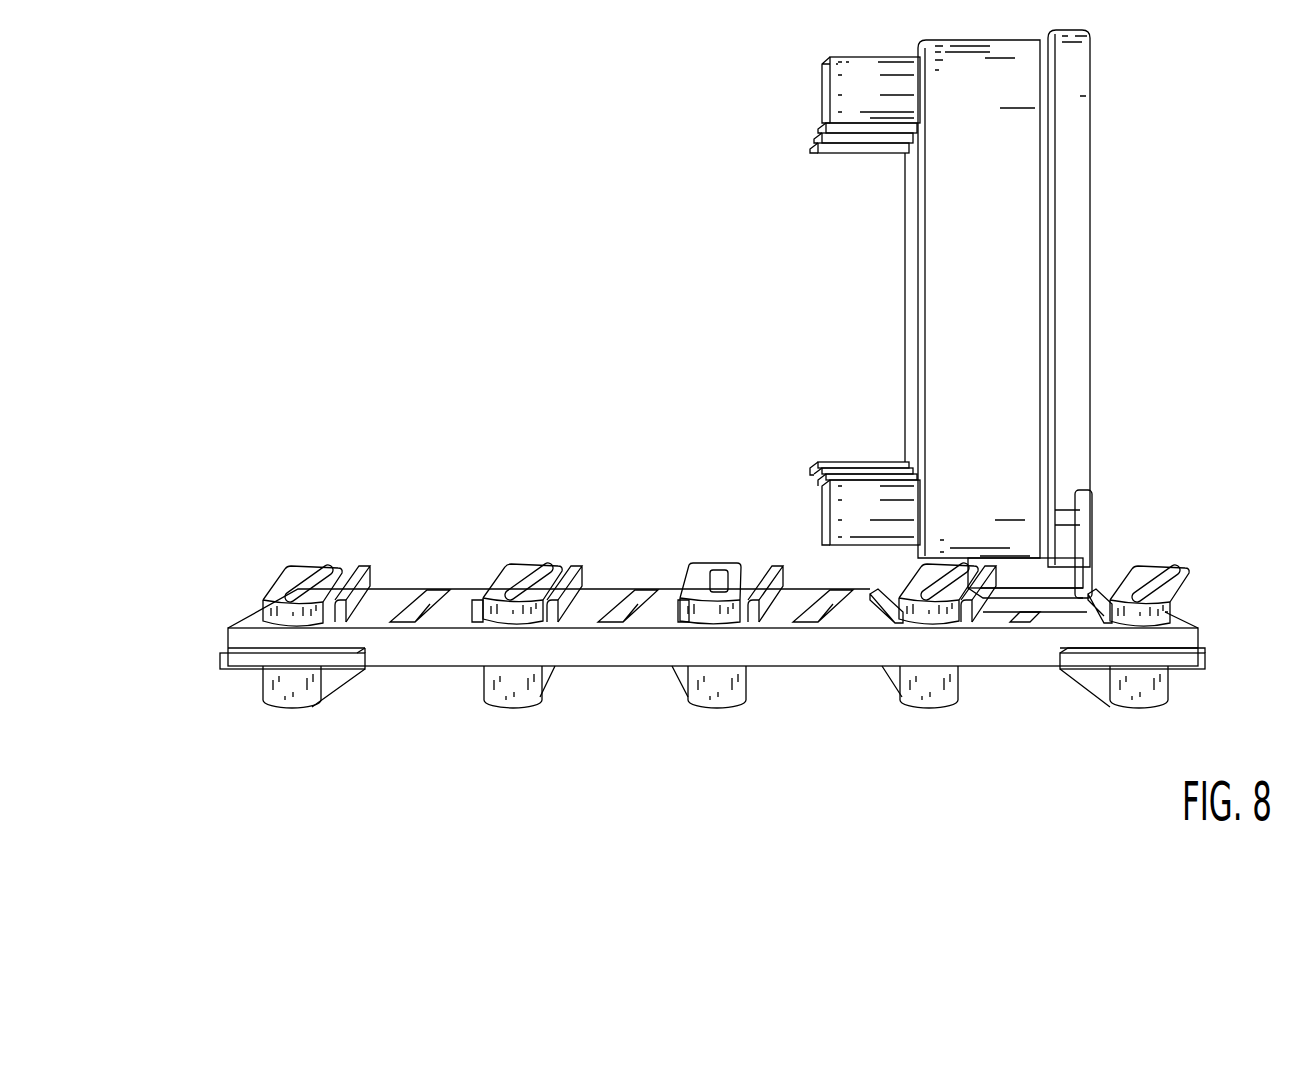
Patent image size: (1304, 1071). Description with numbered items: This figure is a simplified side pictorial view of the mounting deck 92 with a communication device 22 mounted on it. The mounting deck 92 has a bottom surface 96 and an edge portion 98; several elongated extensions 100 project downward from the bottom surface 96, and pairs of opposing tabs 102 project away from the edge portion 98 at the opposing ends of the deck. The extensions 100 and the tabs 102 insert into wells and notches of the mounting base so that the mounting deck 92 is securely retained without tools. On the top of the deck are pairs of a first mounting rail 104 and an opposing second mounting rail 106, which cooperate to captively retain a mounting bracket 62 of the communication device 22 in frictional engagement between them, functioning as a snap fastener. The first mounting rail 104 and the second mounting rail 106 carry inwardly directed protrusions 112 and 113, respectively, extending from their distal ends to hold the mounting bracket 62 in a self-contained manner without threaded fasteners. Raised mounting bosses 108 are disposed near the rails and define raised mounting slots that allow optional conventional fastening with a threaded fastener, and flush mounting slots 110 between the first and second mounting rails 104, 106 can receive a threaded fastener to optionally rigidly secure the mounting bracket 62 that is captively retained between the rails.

The communication device 22 is at (996, 337).
The mounting bracket 62 is at (1057, 582).
The mounting deck 92 is at (715, 662).
The bottom surface 96 is at (414, 667).
The edge portion 98 is at (1190, 640).
The elongated extension 100 is at (283, 708).
The tab 102 is at (222, 660).
The first mounting rail 104 is at (740, 581).
The second mounting rail 106 is at (681, 627).
The raised mounting boss 108 is at (348, 565).
The flush mounting slot 110 is at (440, 587).
The inwardly directed protrusion 112 is at (470, 602).
The inwardly directed protrusion 113 is at (337, 602).